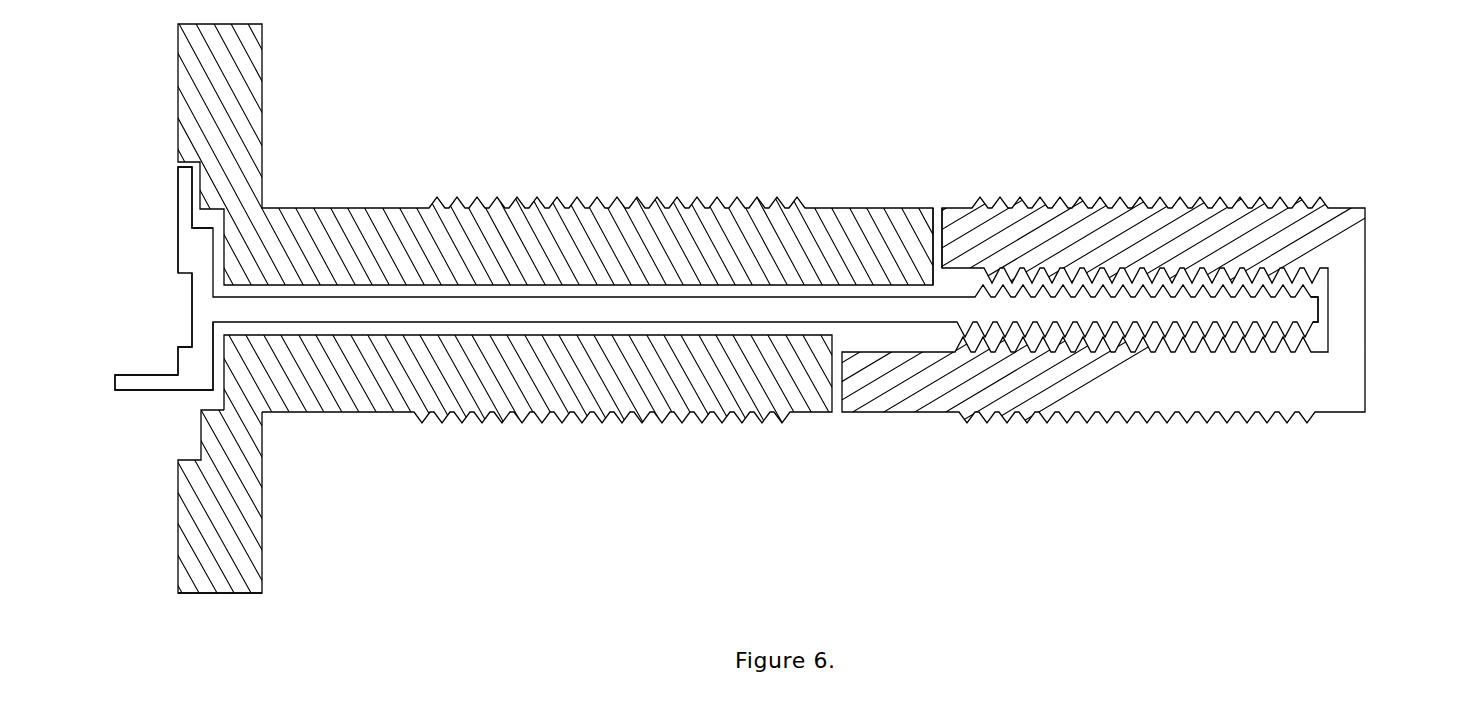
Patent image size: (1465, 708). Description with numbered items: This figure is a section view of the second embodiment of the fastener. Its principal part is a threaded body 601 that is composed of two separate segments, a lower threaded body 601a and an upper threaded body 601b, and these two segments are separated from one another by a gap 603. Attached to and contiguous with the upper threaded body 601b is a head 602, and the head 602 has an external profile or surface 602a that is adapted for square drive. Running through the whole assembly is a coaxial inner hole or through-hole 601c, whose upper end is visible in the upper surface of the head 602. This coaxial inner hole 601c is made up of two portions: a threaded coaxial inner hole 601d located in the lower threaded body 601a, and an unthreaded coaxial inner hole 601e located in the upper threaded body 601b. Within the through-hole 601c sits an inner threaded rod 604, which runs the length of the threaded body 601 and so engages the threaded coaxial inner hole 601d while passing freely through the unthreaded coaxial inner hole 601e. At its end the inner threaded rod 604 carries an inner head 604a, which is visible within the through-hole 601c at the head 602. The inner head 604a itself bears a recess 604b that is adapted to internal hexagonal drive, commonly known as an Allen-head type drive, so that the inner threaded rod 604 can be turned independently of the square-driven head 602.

The threaded body 601 is at (735, 310).
The lower threaded body 601a is at (1253, 206).
The upper threaded body 601b is at (548, 206).
The coaxial inner hole 601c is at (1103, 366).
The threaded coaxial inner hole 601d is at (1382, 326).
The unthreaded coaxial inner hole 601e is at (501, 461).
The head 602 is at (188, 574).
The external profile or surface 602a is at (217, 595).
The gap 603 is at (938, 207).
The inner threaded rod 604 is at (716, 278).
The inner head 604a is at (185, 262).
The recess 604b is at (183, 315).